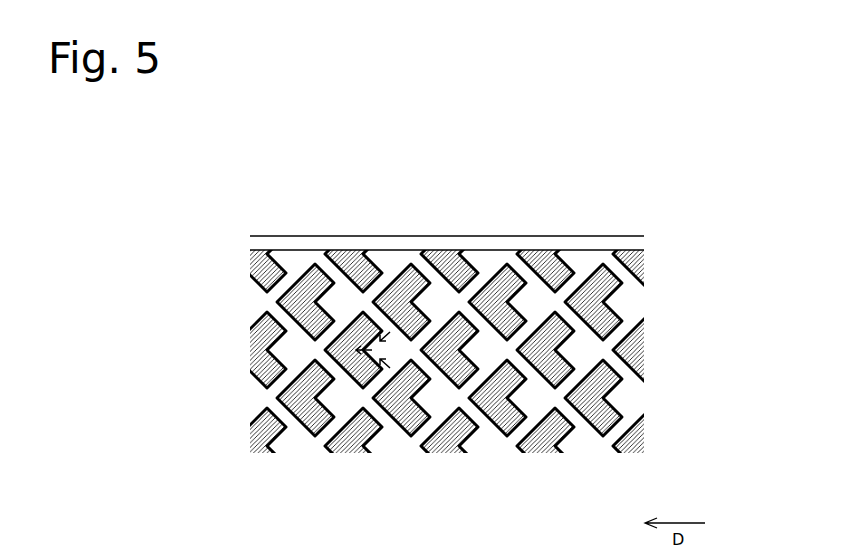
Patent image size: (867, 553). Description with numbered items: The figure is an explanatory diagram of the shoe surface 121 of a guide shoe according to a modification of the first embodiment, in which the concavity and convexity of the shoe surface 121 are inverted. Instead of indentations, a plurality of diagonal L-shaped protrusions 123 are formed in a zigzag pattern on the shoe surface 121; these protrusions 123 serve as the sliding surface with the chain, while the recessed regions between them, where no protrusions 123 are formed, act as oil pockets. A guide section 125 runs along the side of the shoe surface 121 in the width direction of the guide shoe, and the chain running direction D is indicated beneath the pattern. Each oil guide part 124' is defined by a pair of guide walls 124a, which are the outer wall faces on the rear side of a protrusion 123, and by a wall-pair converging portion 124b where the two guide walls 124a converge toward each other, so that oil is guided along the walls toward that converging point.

The shoe surface 121 is at (127, 187).
The guide section 125 is at (307, 248).
The oil guide part 124' is at (472, 337).
The wall-pair converging portion 124b is at (457, 345).
The guide wall 124a is at (465, 330).
The protrusion 123 is at (600, 298).